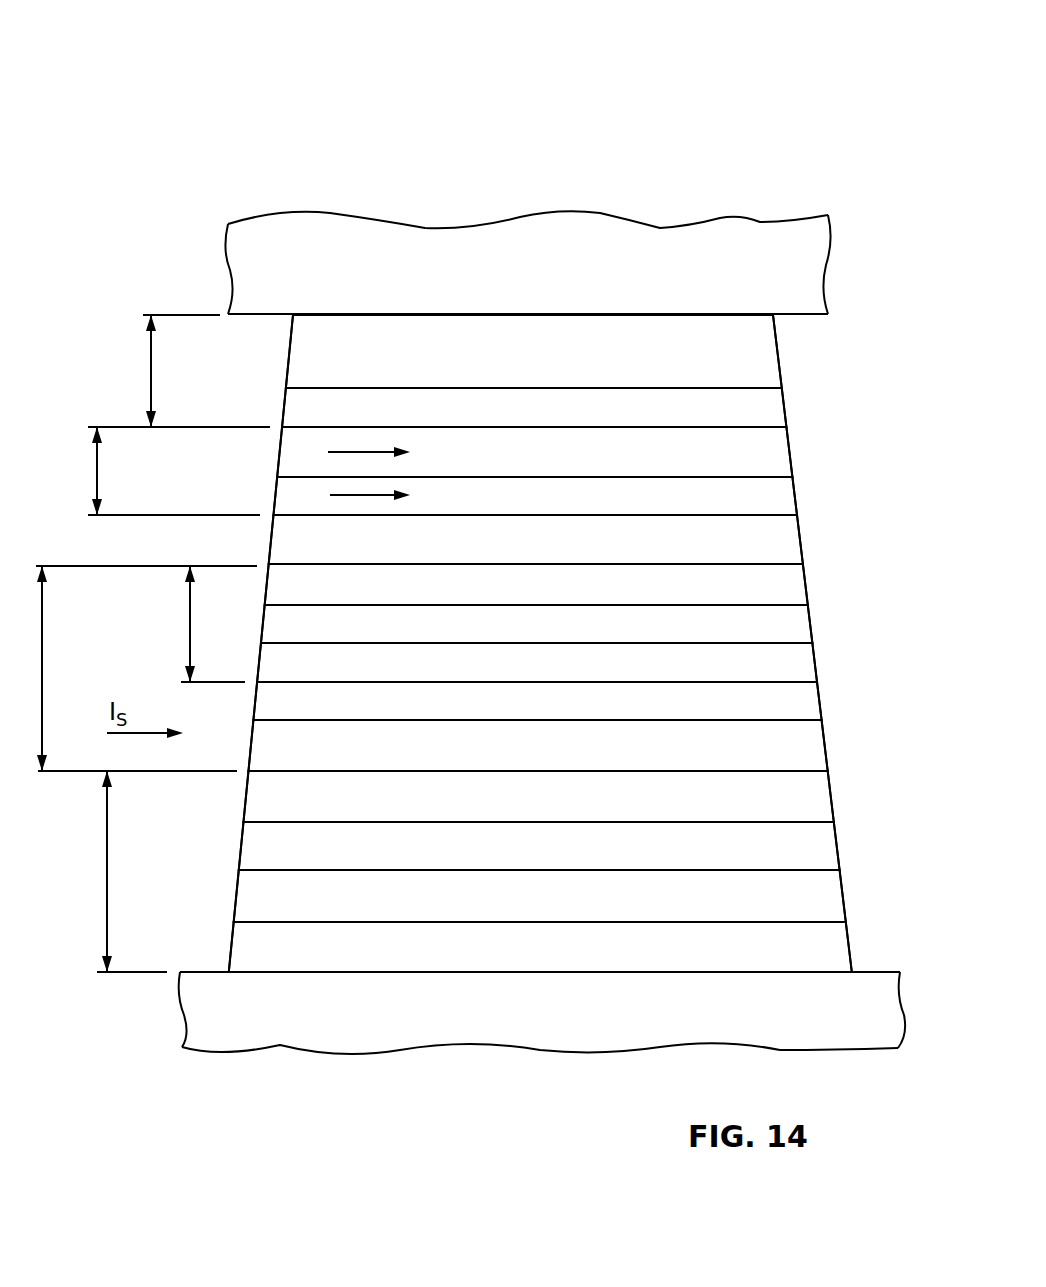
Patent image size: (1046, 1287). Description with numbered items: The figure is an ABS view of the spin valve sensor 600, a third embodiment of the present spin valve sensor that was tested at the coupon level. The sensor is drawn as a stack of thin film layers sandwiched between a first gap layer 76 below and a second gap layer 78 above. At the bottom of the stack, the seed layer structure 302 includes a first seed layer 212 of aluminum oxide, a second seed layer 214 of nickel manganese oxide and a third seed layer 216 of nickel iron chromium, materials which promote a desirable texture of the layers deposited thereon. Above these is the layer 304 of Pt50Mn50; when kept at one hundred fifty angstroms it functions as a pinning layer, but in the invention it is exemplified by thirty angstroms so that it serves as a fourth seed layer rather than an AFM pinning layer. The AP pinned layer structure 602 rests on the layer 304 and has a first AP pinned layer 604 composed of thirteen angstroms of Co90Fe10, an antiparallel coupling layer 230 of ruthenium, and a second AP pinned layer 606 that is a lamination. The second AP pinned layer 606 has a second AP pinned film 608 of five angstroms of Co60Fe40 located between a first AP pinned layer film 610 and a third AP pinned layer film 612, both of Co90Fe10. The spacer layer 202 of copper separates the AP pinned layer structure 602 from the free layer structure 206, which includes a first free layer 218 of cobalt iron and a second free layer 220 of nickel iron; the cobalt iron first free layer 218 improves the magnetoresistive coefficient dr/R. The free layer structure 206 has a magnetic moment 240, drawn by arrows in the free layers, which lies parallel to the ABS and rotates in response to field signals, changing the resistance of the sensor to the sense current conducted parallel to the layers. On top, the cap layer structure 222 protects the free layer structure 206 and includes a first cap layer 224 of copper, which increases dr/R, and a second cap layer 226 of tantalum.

The spin valve sensor 600 is at (643, 308).
The second gap layer 78 is at (746, 280).
The first gap layer 76 is at (755, 1019).
The second cap layer 226 is at (758, 365).
The first cap layer 224 is at (758, 418).
The second free layer 220 is at (758, 462).
The first free layer 218 is at (758, 506).
The spacer layer 202 is at (758, 551).
The third AP pinned layer film 612 is at (758, 594).
The second AP pinned film 608 is at (758, 634).
The first AP pinned layer film 610 is at (758, 673).
The antiparallel coupling layer 230 is at (758, 711).
The first AP pinned layer 604 is at (758, 754).
The layer 304 is at (758, 806).
The third seed layer 216 is at (758, 856).
The second seed layer 214 is at (758, 906).
The first seed layer 212 is at (758, 956).
The magnetic moment 240 is at (340, 495).
The cap layer structure 222 is at (322, 271).
The free layer structure 206 is at (325, 289).
The AP pinned layer structure 602 is at (337, 392).
The second AP pinned layer 606 is at (192, 624).
The seed layer structure 302 is at (297, 960).